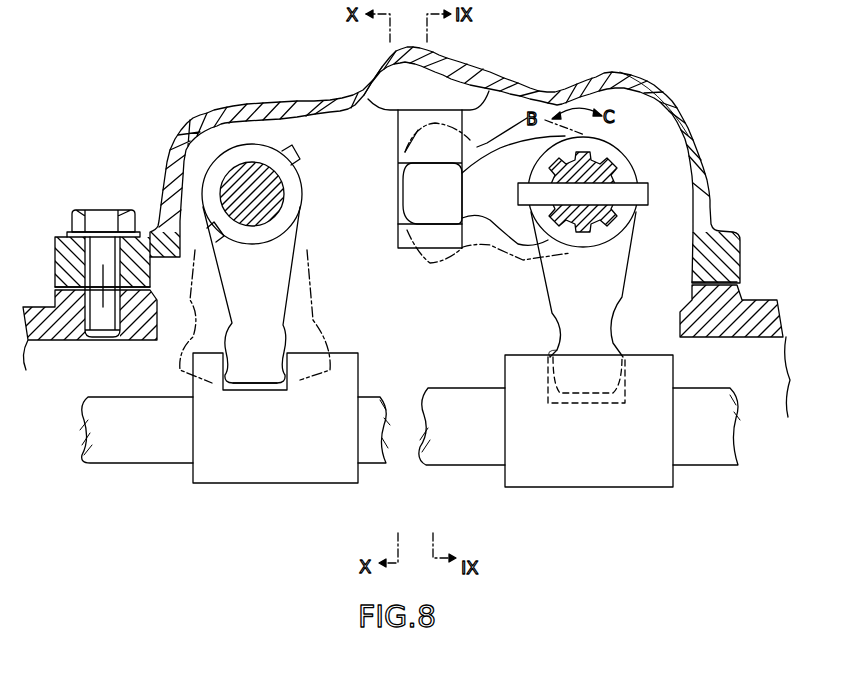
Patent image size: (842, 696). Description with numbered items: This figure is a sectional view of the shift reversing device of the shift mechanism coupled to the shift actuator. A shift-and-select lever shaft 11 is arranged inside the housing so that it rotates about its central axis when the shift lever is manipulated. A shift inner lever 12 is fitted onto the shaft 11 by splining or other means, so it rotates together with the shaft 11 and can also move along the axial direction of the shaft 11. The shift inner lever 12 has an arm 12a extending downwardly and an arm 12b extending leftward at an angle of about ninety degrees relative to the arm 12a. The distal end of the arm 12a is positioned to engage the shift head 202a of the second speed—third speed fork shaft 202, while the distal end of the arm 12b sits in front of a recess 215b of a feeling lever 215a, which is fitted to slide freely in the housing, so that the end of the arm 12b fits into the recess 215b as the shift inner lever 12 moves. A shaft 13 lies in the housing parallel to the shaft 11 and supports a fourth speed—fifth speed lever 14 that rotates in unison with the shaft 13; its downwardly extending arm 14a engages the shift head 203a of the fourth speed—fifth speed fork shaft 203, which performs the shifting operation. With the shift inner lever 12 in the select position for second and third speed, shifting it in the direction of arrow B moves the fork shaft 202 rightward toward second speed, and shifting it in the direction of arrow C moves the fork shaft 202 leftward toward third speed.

The shift-and-select lever shaft 11 is at (597, 163).
The shift inner lever 12 is at (628, 173).
The arm 12a is at (618, 300).
The arm 12b is at (493, 210).
The shaft 13 is at (245, 173).
The fourth speed—fifth speed lever 14 is at (213, 172).
The arm 14a is at (277, 298).
The second speed—third speed fork shaft 202 is at (480, 455).
The shift head 202a is at (595, 473).
The fourth speed—fifth speed fork shaft 203 is at (128, 448).
The shift head 203a is at (243, 468).
The feeling lever 215a is at (403, 148).
The recess 215b is at (403, 218).